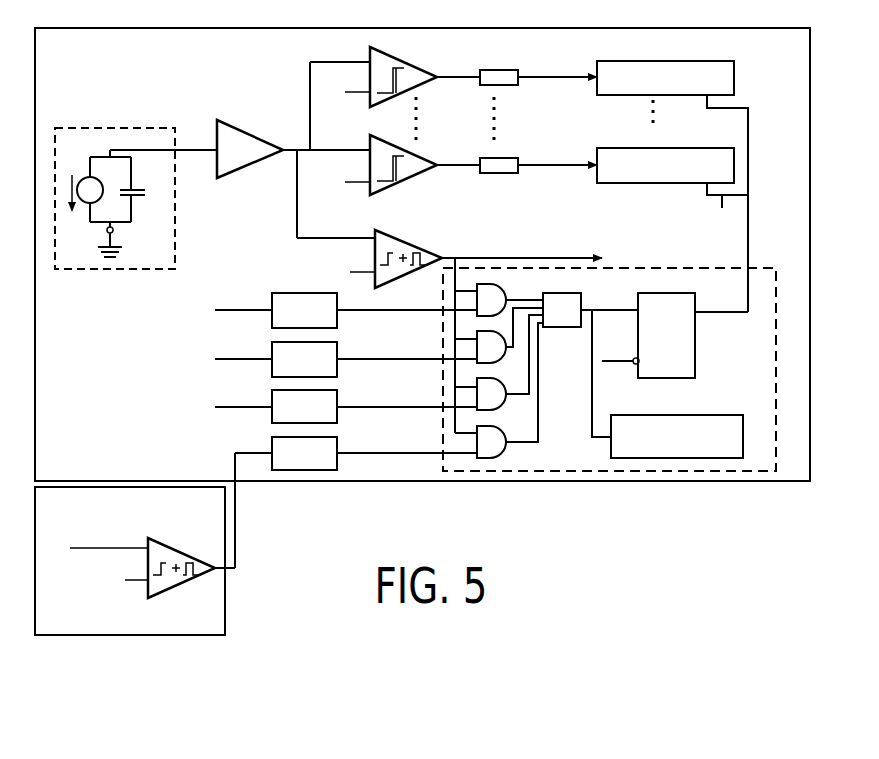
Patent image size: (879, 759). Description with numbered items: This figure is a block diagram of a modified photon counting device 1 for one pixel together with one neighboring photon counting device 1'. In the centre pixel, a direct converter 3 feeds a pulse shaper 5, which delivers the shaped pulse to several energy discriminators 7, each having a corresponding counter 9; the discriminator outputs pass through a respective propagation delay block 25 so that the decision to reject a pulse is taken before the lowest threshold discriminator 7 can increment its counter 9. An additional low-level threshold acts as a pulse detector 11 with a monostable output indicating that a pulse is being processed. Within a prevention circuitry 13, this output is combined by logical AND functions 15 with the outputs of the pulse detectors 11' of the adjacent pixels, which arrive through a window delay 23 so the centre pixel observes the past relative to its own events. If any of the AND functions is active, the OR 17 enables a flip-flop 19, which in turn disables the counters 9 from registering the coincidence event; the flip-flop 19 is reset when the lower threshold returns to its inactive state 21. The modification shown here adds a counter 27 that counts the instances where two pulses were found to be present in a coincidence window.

The photon counting device 1 is at (422, 300).
The neighboring photon counting device 1' is at (169, 561).
The direct converter 3 is at (133, 128).
The pulse shaper 5 is at (250, 130).
The energy discriminator 7 is at (422, 67).
The counter 9 is at (737, 73).
The pulse detector 11 is at (476, 322).
The pulse detector of neighboring pixel 11' is at (152, 548).
The prevention circuitry 13 is at (655, 268).
The logical AND function 15 is at (506, 455).
The OR 17 is at (562, 327).
The flip-flop 19 is at (695, 335).
The inactive state 21 is at (543, 168).
The window delay 23 is at (292, 293).
The propagation delay block 25 is at (520, 70).
The counter 27 is at (693, 415).